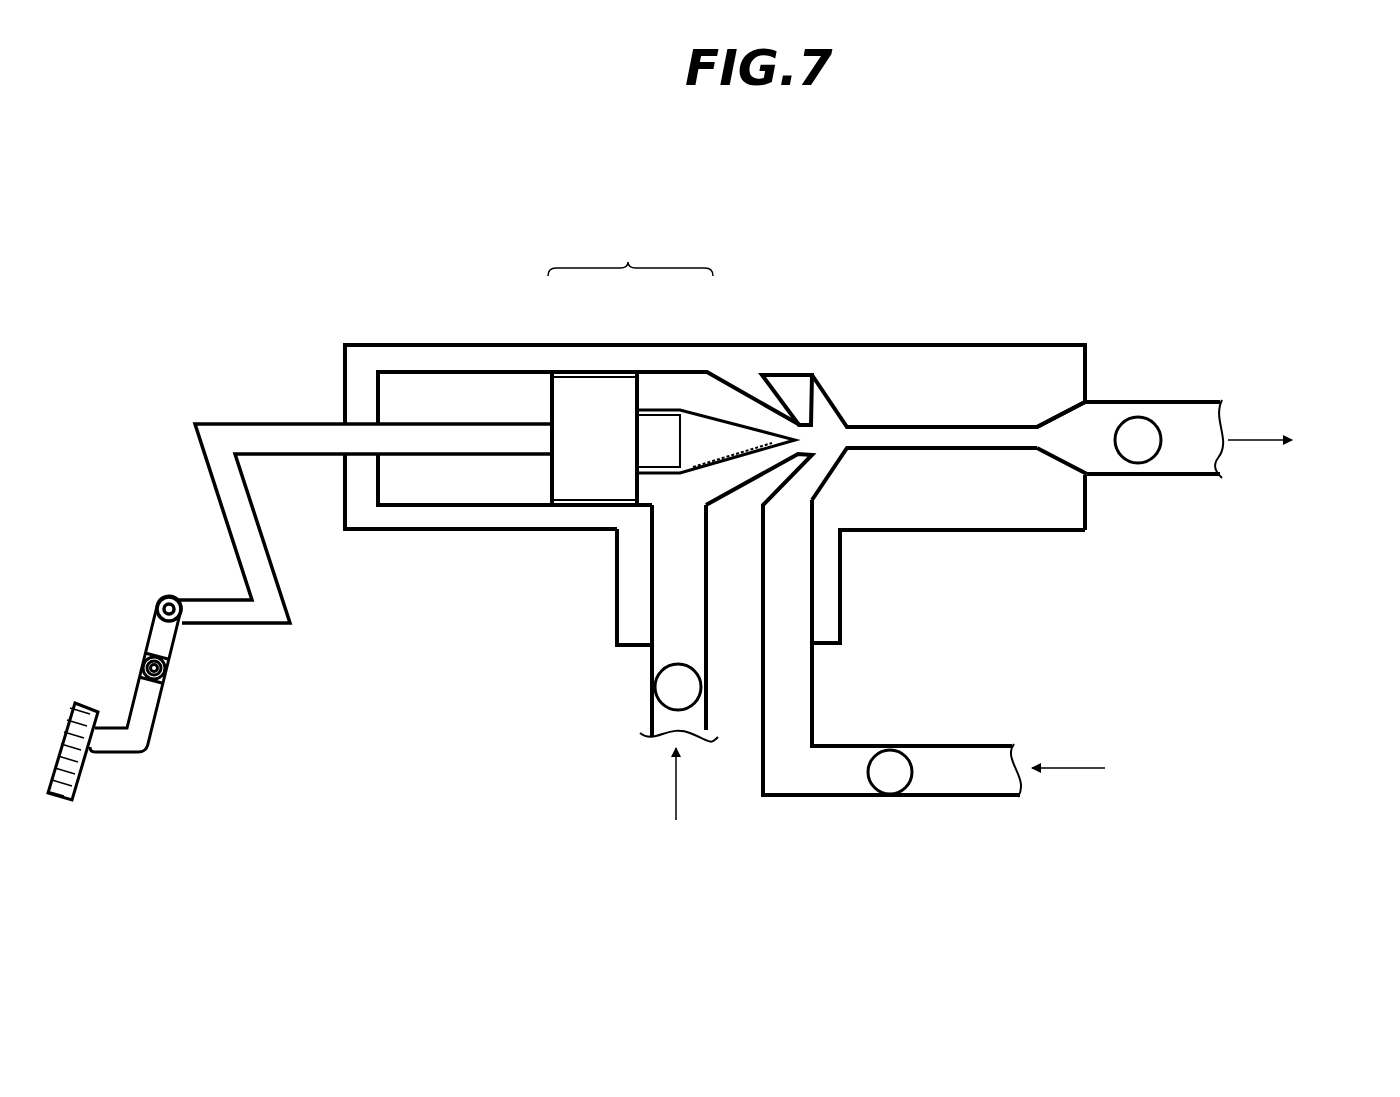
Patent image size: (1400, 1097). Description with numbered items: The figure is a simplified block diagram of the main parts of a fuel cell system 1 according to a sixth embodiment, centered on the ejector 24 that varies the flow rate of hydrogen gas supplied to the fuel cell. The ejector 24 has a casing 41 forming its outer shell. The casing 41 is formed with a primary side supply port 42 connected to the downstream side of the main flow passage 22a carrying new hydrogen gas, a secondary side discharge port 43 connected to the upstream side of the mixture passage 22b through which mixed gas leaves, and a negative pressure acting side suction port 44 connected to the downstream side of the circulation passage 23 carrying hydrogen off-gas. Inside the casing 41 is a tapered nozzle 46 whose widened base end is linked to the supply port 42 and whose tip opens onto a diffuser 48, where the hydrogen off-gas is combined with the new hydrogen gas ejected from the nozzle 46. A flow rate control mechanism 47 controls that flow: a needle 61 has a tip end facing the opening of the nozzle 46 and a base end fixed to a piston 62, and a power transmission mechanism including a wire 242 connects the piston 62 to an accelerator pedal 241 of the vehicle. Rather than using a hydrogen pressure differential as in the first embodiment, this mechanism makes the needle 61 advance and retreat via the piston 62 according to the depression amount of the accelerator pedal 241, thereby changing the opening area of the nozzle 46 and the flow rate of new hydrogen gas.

The fuel cell system 1 is at (276, 256).
The accelerator pedal 241 is at (86, 703).
The wire 242 is at (478, 420).
The piston 62 is at (590, 395).
The needle 61 is at (743, 433).
The flow rate control mechanism 47 is at (630, 255).
The nozzle 46 is at (803, 422).
The diffuser 48 is at (958, 437).
The secondary side discharge port 43 is at (1062, 430).
The mixture passage 22b is at (1186, 420).
The ejector 24 is at (990, 540).
The casing 41 is at (1052, 510).
The primary side supply port 42 is at (663, 591).
The main flow passage 22a is at (665, 723).
The negative pressure acting side suction port 44 is at (790, 607).
The circulation passage 23 is at (972, 773).